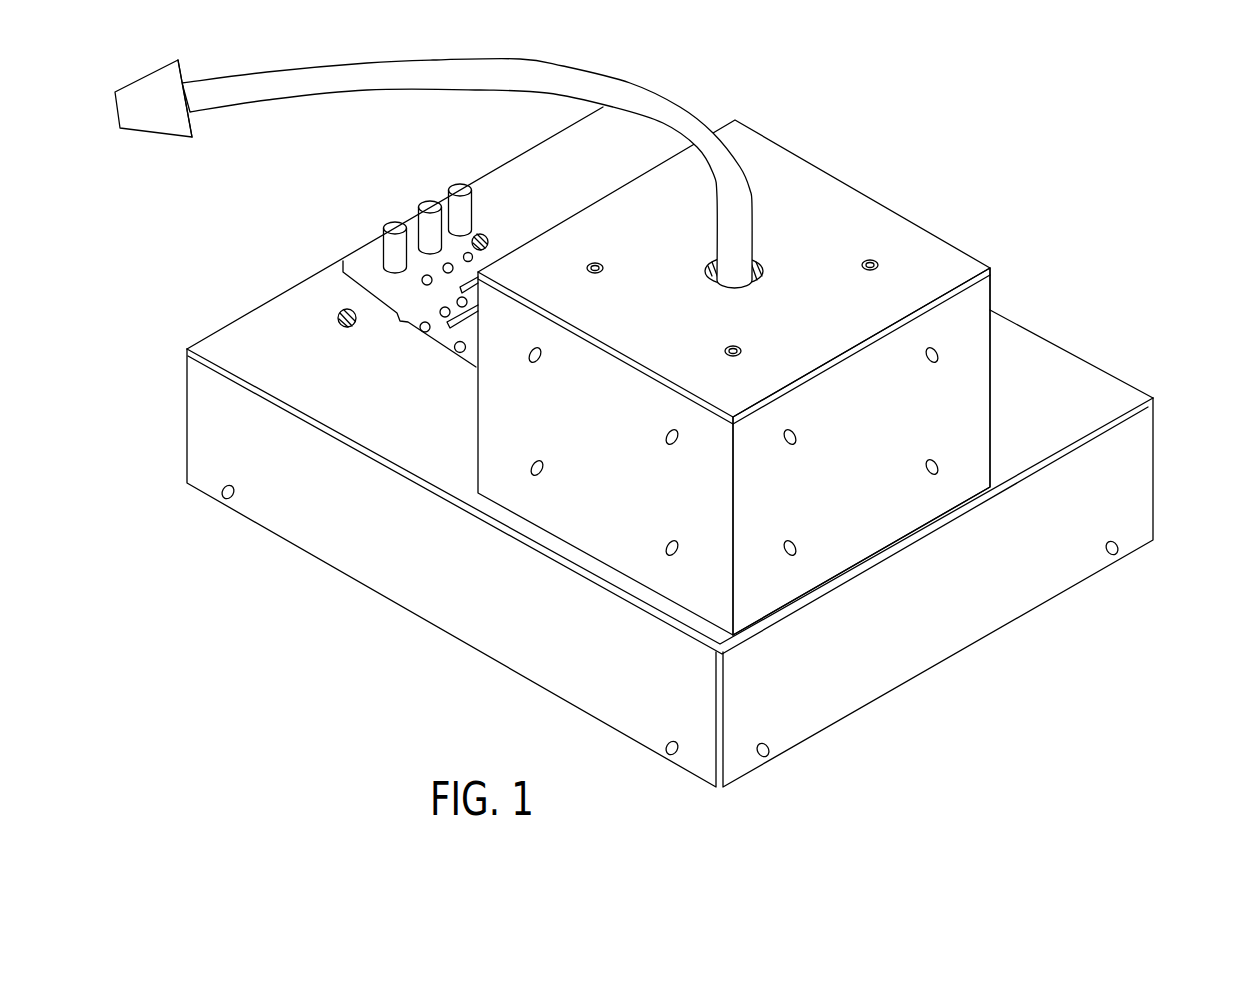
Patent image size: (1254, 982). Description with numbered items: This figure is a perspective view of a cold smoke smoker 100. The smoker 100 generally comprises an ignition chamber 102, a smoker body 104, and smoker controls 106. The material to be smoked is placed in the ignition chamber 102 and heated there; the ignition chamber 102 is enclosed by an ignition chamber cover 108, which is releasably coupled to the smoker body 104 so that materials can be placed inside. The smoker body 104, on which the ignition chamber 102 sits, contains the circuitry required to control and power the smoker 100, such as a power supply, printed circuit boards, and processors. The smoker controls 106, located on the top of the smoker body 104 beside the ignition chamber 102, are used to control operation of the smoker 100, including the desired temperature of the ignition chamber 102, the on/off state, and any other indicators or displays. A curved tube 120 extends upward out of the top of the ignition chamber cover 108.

The cold smoke smoker 100 is at (669, 423).
The ignition chamber 102 is at (995, 252).
The smoker body 104 is at (375, 587).
The smoker controls 106 is at (400, 323).
The ignition chamber cover 108 is at (868, 475).
The cable 120 is at (744, 228).